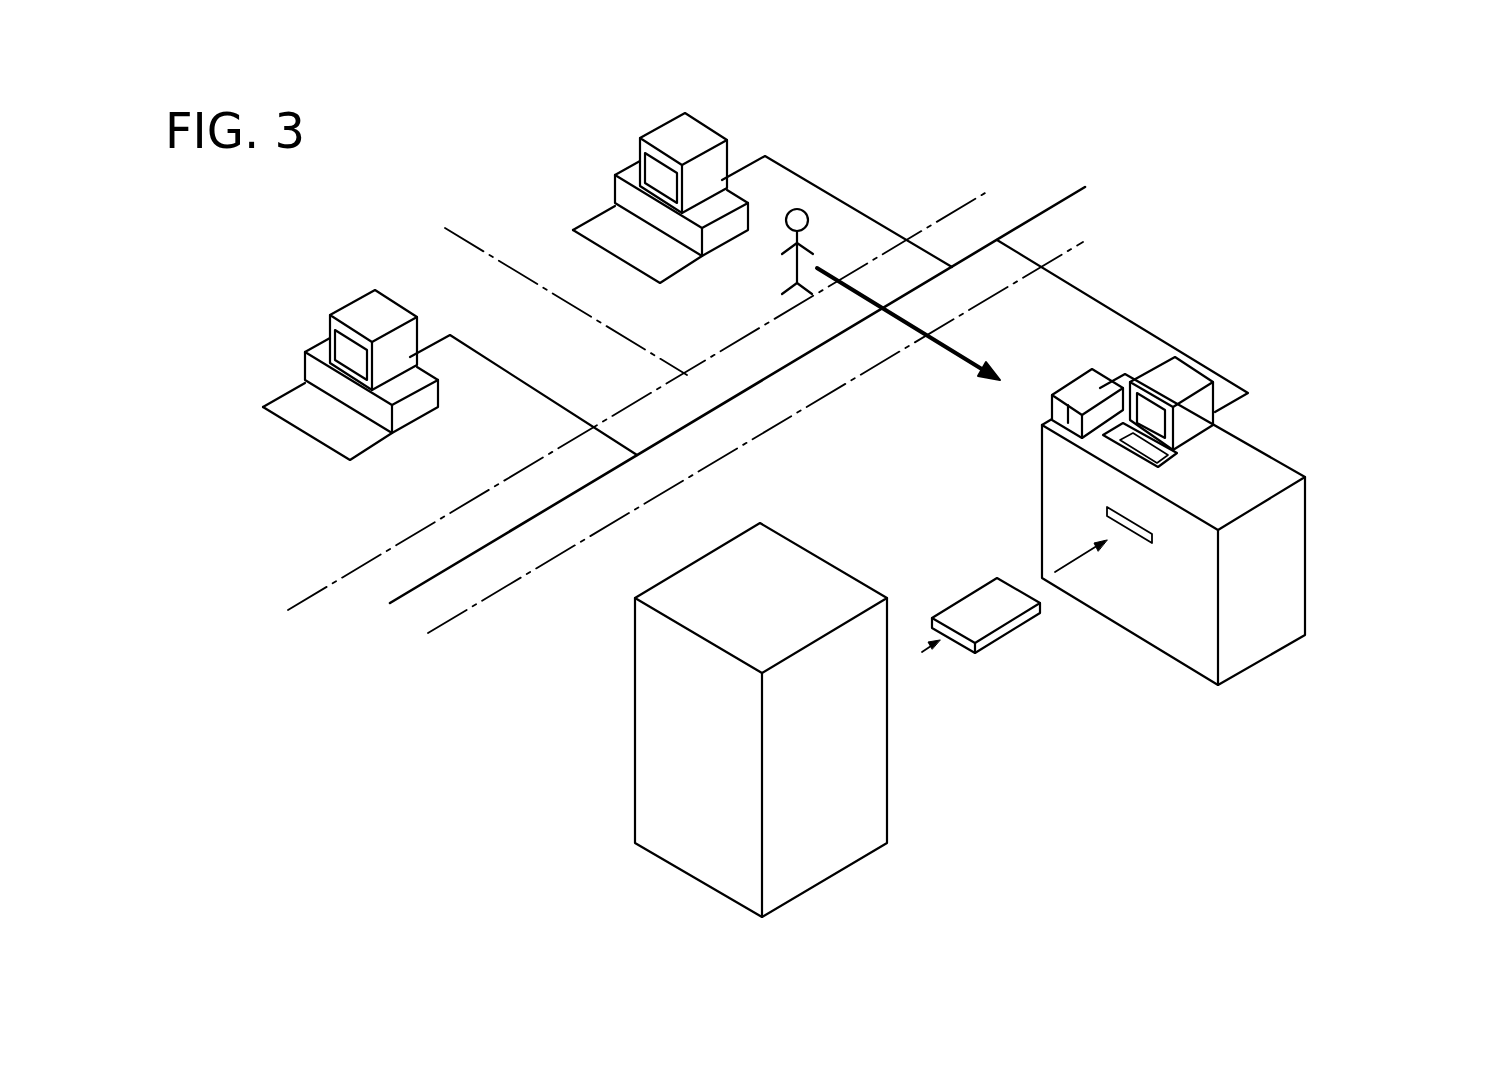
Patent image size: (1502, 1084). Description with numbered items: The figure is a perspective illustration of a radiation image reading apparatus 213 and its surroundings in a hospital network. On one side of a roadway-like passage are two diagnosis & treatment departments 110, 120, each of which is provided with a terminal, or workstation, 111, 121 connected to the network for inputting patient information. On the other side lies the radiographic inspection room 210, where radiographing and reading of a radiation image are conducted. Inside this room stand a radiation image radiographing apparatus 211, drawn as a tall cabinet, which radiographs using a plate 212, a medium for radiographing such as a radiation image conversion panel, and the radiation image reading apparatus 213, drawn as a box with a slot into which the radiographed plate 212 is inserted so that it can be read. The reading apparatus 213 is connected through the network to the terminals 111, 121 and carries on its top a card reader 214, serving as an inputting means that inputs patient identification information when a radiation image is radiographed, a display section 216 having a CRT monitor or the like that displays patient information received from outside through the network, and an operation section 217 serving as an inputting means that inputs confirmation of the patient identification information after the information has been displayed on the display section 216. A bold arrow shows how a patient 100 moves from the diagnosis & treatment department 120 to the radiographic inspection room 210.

The patient 100 is at (797, 209).
The diagnosis & treatment department 110 is at (450, 411).
The terminal (WS) 111 is at (302, 316).
The diagnosis & treatment department 120 is at (762, 234).
The terminal (WS) 121 is at (587, 169).
The radiographic inspection room 210 is at (908, 344).
The radiation image radiographing apparatus 211 is at (842, 852).
The plate 212 is at (965, 610).
The radiation image reading apparatus 213 is at (1118, 603).
The card reader 214 is at (1073, 386).
The display section 216 is at (1187, 433).
The operation section 217 is at (1155, 455).